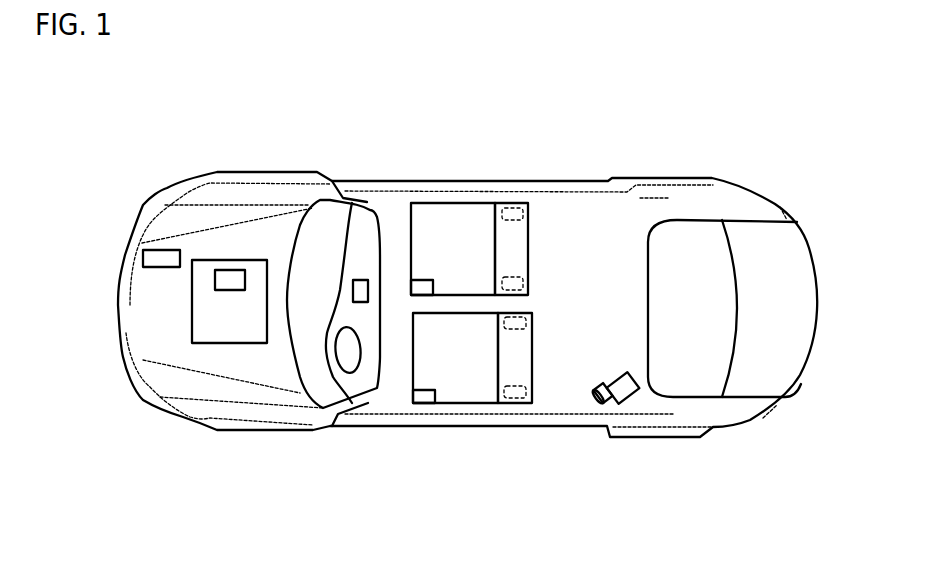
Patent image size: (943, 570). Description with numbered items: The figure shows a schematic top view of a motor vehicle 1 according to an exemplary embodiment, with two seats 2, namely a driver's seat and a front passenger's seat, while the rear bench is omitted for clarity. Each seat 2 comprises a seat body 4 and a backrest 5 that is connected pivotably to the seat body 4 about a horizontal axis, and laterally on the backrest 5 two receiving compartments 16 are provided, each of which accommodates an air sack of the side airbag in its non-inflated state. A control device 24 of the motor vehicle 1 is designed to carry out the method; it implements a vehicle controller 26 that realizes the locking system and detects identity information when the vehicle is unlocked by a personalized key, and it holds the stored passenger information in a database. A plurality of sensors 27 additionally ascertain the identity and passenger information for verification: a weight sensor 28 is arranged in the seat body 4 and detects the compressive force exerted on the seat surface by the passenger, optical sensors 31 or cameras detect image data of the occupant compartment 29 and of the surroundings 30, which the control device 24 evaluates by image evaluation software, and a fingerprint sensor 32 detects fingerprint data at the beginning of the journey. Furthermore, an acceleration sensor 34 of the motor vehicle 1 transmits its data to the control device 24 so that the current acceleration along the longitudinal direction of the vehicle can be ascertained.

The motor vehicle 1 is at (531, 158).
The seat 2 is at (548, 219).
The seat body 4 is at (463, 203).
The backrest 5 is at (528, 270).
The receiving compartment 16 is at (523, 203).
The control device 24 is at (228, 260).
The vehicle controller 26 is at (243, 270).
The sensor 27 is at (531, 318).
The weight sensor 28 is at (430, 280).
The occupant compartment 29 is at (384, 313).
The surroundings 30 is at (198, 498).
The optical sensor 31 is at (622, 404).
The fingerprint sensor 32 is at (360, 280).
The acceleration sensor 34 is at (153, 250).